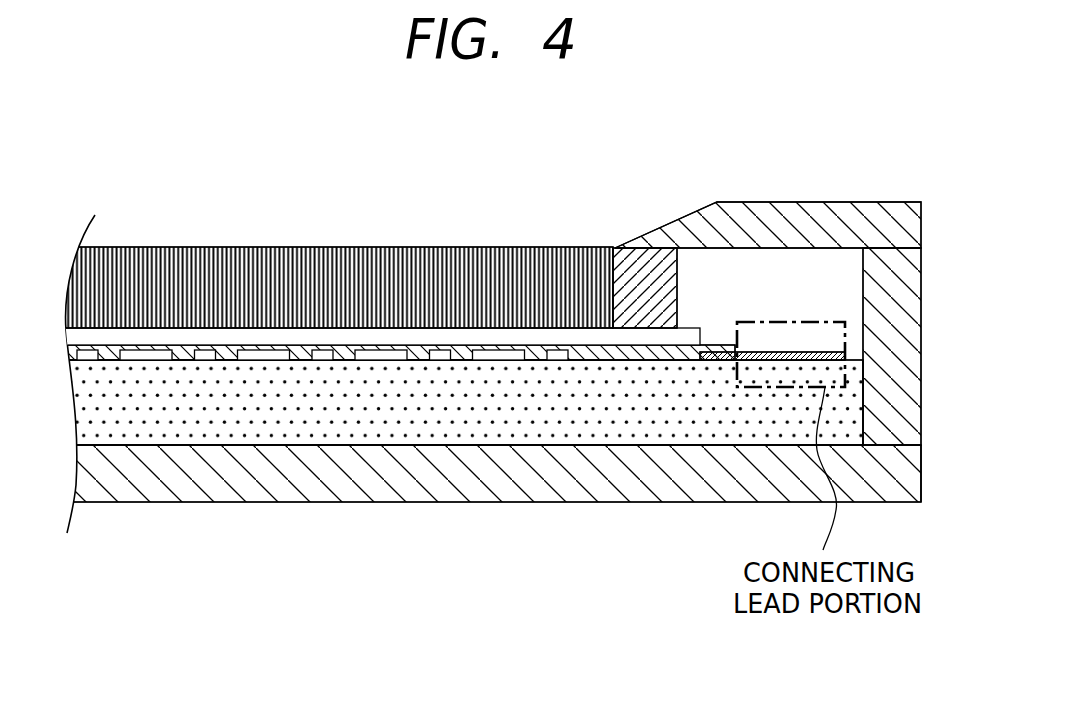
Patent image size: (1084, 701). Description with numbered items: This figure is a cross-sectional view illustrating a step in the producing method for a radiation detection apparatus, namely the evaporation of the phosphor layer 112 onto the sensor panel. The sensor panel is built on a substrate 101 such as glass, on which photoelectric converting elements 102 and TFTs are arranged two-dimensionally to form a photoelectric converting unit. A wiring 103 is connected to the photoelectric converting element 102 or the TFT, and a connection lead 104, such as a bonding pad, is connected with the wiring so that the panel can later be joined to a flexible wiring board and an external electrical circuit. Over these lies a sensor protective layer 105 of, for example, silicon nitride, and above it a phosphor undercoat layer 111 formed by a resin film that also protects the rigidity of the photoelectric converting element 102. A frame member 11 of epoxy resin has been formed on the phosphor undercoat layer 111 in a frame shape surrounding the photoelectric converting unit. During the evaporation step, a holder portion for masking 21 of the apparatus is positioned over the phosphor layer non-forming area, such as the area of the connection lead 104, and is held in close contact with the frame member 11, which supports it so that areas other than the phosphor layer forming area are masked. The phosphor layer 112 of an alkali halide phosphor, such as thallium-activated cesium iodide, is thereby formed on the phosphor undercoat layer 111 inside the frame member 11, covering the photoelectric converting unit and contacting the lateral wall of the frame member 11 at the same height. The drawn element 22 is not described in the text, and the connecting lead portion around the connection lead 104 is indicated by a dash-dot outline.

The frame member 11 is at (640, 272).
The holder portion for masking 21 is at (735, 215).
The substrate 22 is at (480, 535).
The substrate 101 is at (146, 485).
The photoelectric converting element 102 is at (257, 360).
The wiring 103 is at (327, 353).
The connection lead 104 is at (770, 360).
The sensor protective layer 105 is at (457, 430).
The phosphor undercoat layer 111 is at (197, 333).
The phosphor layer 112 is at (328, 247).